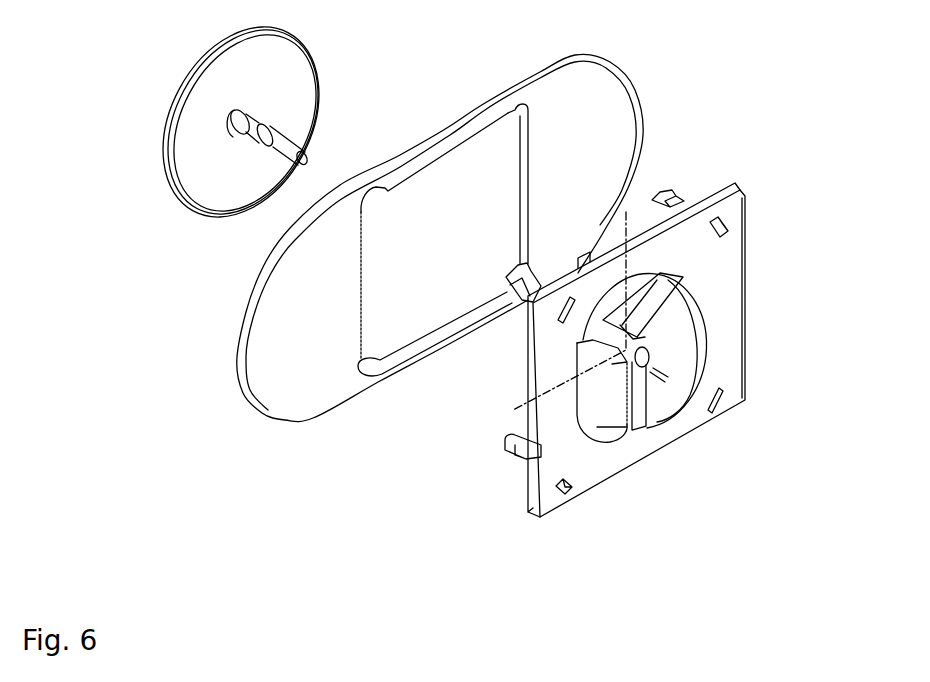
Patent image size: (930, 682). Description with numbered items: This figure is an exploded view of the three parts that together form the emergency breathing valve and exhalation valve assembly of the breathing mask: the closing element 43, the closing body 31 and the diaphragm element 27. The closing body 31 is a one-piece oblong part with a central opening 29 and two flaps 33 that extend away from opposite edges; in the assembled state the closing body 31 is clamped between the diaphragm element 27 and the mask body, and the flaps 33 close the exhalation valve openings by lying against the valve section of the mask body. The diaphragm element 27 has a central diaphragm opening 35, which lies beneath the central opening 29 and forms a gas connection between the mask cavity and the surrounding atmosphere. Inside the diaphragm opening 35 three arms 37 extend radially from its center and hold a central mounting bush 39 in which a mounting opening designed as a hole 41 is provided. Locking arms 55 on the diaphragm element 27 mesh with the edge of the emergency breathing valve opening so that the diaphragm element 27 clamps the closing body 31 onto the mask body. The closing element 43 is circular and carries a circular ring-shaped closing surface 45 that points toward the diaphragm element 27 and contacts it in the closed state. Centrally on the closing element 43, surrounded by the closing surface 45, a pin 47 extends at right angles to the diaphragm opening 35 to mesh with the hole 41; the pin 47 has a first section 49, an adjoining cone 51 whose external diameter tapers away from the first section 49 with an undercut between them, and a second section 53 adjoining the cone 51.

The diaphragm element 27 is at (656, 325).
The central opening 29 is at (449, 244).
The closing body 31 is at (483, 211).
The flaps 33 is at (598, 164).
The central diaphragm opening 35 is at (600, 398).
The arms 37 is at (705, 419).
The central mounting bush 39 is at (638, 378).
The hole 41 is at (641, 357).
The closing element 43 is at (244, 146).
The closing surface 45 is at (316, 61).
The pin 47 is at (244, 183).
The first section 49 is at (238, 122).
The cone 51 is at (257, 132).
The second section 53 is at (293, 150).
The locking arms 55 is at (671, 198).